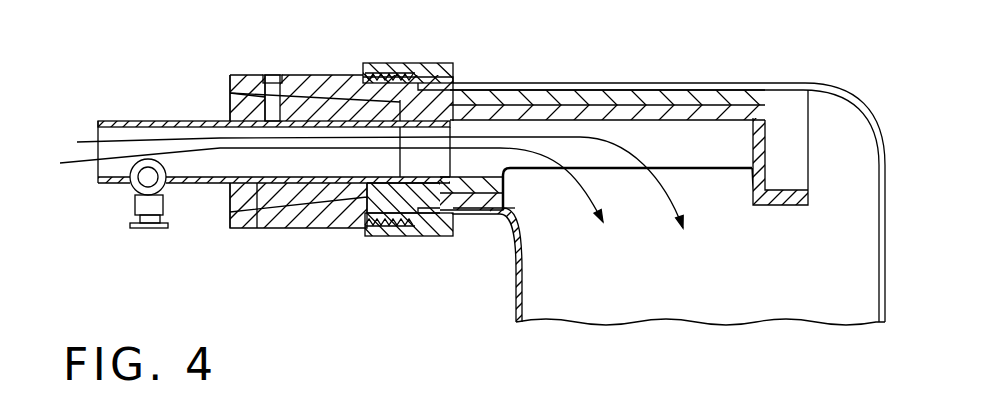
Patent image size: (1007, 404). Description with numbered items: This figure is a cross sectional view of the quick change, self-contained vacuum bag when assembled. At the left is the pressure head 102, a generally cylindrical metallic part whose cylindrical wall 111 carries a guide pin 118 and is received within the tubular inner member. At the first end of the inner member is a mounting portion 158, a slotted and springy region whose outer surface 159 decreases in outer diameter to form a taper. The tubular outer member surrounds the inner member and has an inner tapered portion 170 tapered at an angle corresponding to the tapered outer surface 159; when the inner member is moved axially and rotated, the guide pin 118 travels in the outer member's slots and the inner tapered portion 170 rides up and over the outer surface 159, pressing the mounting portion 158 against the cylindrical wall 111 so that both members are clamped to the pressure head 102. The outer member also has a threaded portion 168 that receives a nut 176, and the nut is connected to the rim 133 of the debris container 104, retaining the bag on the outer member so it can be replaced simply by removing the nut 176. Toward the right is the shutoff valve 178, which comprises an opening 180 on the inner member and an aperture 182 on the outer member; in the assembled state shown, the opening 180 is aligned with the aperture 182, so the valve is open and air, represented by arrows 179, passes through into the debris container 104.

The pressure head 102 is at (128, 194).
The debris container 104 is at (890, 136).
The cylindrical wall 111 is at (138, 120).
The guide pin 118 is at (273, 73).
The rim 133 is at (430, 80).
The mounting portion 158 is at (247, 83).
The outer surface 159 is at (232, 100).
The threaded portion 168 is at (397, 62).
The inner tapered portion 170 is at (230, 106).
The nut 176 is at (372, 77).
The shutoff valve 178 is at (727, 193).
The arrows 179 is at (66, 165).
The opening 180 is at (505, 186).
The aperture 182 is at (521, 213).